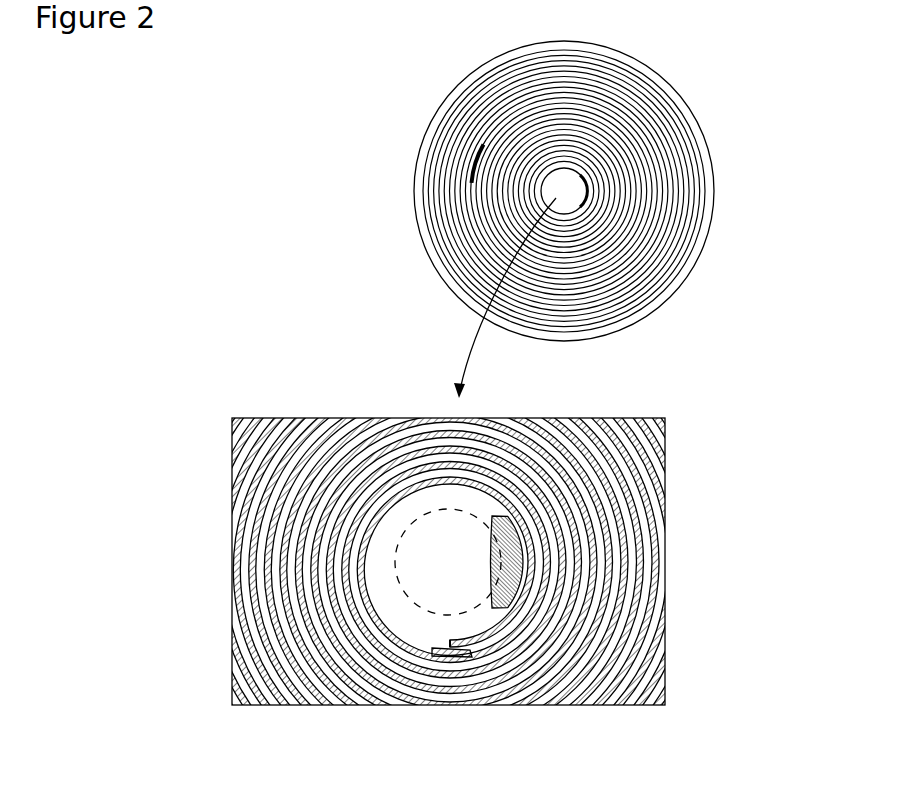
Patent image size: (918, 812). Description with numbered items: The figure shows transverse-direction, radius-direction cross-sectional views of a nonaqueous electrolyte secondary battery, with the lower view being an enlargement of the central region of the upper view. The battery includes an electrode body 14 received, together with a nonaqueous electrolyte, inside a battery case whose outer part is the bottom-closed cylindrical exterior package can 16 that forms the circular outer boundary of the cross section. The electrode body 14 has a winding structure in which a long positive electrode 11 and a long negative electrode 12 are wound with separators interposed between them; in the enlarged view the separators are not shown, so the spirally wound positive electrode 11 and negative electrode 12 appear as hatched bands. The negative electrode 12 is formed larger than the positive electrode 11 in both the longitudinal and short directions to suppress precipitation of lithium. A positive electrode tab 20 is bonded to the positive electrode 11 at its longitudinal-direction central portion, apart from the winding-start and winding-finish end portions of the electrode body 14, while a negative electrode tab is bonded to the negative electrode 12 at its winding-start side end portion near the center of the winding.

The positive electrode 11 is at (453, 655).
The negative electrode 12 is at (440, 643).
The electrode body 14 is at (690, 167).
The exterior package can 16 is at (663, 82).
The positive electrode tab 20 is at (470, 146).